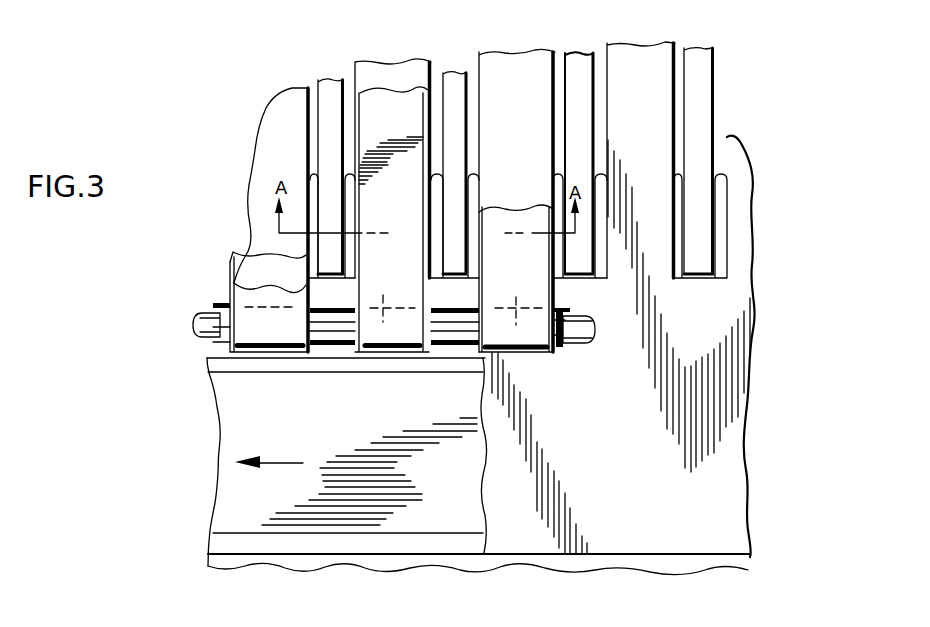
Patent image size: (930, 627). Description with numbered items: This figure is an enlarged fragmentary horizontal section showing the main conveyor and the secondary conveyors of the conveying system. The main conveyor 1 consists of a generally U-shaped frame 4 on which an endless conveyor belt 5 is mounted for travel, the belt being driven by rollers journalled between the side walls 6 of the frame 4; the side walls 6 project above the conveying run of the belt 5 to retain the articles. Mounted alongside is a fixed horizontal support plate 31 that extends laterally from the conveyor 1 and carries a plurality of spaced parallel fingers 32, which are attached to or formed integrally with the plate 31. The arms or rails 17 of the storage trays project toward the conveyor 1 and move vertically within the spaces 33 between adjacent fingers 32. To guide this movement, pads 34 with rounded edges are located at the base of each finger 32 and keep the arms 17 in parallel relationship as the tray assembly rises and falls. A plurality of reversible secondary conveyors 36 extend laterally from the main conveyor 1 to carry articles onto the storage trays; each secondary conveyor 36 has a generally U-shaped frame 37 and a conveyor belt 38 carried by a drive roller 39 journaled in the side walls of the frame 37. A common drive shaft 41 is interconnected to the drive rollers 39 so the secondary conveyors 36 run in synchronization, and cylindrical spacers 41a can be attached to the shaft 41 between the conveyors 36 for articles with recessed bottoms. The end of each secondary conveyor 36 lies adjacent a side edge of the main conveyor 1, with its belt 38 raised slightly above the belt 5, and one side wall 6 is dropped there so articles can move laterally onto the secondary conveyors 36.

The conveyor 1 is at (205, 506).
The frame 4 is at (202, 378).
The endless conveyor belt 5 is at (228, 449).
The side walls 6 is at (248, 363).
The arms or rails 17 is at (448, 127).
The horizontal support plate 31 is at (740, 364).
The fingers 32 is at (270, 127).
The spaces 33 is at (309, 87).
The pads 34 is at (437, 197).
The secondary conveyors 36 is at (226, 274).
The U-shaped frame 37 is at (233, 297).
The conveyor belt 38 is at (257, 290).
The drive roller 39 is at (185, 352).
The common drive shaft 41 is at (583, 343).
The cylindrical spacers 41a is at (220, 324).